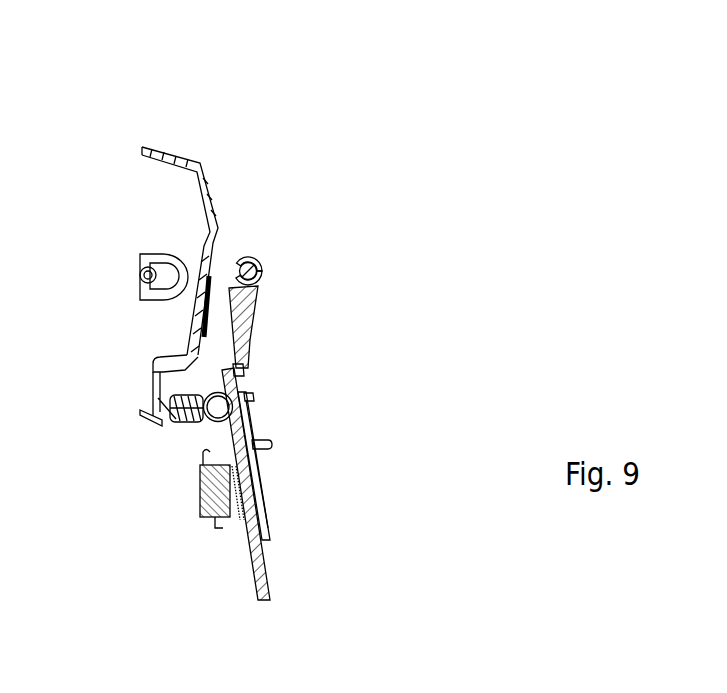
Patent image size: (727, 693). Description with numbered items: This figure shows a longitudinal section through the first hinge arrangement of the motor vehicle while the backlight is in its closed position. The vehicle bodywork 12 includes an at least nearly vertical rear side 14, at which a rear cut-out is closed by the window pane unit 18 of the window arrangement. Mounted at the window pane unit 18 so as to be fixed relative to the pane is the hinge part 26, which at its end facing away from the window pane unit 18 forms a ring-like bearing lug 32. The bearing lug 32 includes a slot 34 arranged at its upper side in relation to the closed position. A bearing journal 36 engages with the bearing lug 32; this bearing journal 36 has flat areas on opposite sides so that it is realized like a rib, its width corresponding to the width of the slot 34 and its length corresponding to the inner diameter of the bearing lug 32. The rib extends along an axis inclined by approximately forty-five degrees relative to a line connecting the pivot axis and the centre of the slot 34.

The vehicle bodywork 12 is at (255, 259).
The rear side 14 is at (214, 213).
The window pane unit 18 is at (263, 568).
The hinge part 26 is at (252, 336).
The bearing lug 32 is at (262, 266).
The slot 34 is at (244, 256).
The bearing journal 36 is at (260, 276).